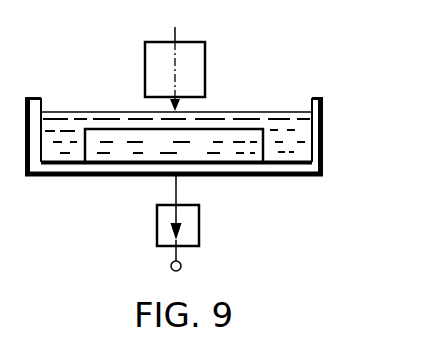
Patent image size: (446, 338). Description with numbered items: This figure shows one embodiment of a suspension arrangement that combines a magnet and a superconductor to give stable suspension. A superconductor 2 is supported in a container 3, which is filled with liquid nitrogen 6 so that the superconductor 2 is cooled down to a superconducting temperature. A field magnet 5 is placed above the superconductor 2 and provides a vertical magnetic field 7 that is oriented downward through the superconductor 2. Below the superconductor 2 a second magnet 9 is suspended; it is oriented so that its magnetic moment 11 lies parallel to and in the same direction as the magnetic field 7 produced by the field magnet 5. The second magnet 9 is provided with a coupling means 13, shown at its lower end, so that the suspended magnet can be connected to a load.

The superconductor 2 is at (263, 148).
The container 3 is at (323, 133).
The field magnet 5 is at (205, 64).
The liquid nitrogen 6 is at (62, 112).
The vertical magnetic field 7 is at (175, 37).
The second magnet 9 is at (199, 228).
The magnetic moment 11 is at (176, 187).
The coupling means 13 is at (181, 264).